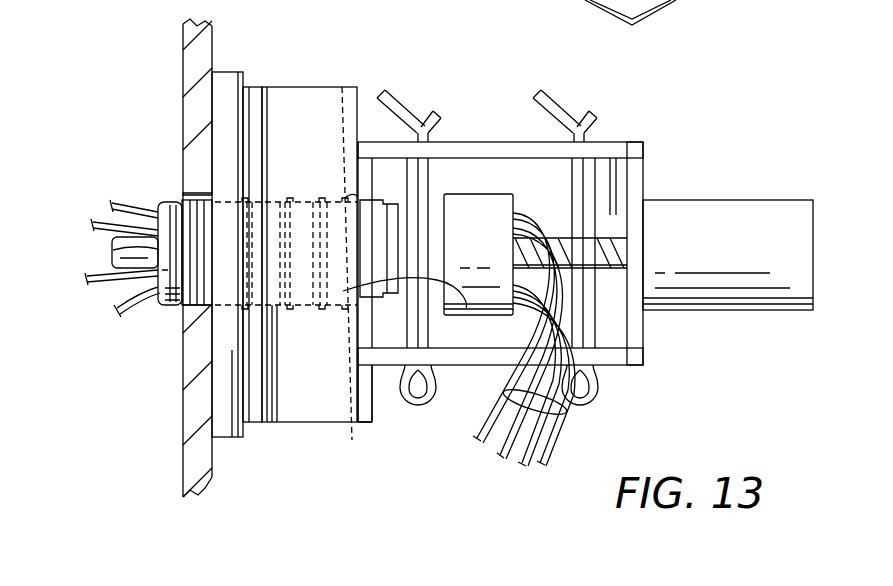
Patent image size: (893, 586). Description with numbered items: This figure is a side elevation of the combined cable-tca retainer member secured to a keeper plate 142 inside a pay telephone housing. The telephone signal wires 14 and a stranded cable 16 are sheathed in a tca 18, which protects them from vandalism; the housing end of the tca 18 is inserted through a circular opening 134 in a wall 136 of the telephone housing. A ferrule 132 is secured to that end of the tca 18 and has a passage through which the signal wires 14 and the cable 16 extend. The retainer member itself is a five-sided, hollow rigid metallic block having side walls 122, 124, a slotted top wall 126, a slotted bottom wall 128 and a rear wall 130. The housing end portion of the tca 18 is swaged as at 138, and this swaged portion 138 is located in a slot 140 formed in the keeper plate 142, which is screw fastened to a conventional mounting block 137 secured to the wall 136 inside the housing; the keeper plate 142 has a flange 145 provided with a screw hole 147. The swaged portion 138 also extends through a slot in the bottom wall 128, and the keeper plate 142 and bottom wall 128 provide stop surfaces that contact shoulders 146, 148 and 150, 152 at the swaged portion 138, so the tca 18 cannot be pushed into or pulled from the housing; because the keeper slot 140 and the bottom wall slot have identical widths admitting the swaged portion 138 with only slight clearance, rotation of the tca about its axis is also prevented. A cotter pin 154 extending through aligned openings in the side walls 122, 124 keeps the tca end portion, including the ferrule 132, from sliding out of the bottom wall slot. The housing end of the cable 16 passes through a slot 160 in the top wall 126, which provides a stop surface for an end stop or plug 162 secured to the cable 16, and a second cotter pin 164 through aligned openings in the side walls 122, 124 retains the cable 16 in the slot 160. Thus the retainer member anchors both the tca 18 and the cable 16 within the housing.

The telephone signal wires 14 is at (565, 412).
The stranded cable 16 is at (140, 247).
The tca 18 is at (168, 293).
The side wall 122 is at (517, 142).
The side wall 124 is at (467, 352).
The top wall 126 is at (643, 157).
The bottom wall 128 is at (366, 143).
The rear wall 130 is at (550, 167).
The ferrule 132 is at (478, 197).
The circular opening 134 is at (176, 308).
The wall 136 is at (187, 48).
The mounting block 137 is at (228, 397).
The swaged portion 138 is at (356, 198).
The slot 140 is at (468, 300).
The keeper plate 142 is at (315, 97).
The flange 145 is at (272, 100).
The shoulder 146 is at (372, 186).
The screw hole 147 is at (645, 8).
The shoulder 148 is at (369, 345).
The shoulder 150 is at (338, 187).
The shoulder 152 is at (355, 278).
The cotter pin 154 is at (418, 400).
The slot 160 is at (642, 242).
The end stop or plug 162 is at (782, 198).
The cotter pin 164 is at (597, 387).